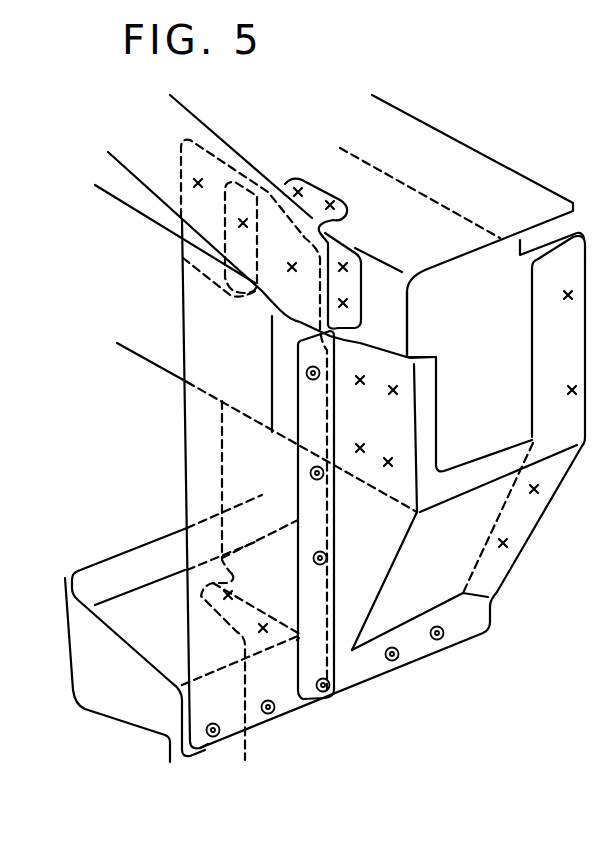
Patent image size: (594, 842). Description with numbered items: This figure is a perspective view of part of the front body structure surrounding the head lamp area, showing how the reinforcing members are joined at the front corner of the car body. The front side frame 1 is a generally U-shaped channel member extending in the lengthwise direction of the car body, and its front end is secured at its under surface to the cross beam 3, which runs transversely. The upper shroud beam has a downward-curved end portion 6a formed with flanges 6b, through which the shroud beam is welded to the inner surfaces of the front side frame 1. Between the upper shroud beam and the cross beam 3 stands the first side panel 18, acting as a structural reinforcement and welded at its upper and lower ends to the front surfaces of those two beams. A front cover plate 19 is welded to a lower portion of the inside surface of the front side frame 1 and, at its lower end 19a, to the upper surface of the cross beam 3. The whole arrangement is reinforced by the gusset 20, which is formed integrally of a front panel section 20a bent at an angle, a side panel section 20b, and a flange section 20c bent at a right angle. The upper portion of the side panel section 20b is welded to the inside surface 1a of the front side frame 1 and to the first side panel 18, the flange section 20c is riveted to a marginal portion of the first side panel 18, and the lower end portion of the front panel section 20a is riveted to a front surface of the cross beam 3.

The front side frame 1 is at (397, 117).
The inside surface of the front side frame 1a is at (400, 304).
The cross beam 3 is at (118, 620).
The end portion of the upper shroud beam 6a is at (168, 112).
The flanges 6b is at (310, 188).
The first side panel 18 is at (197, 477).
The front cover plate 19 is at (222, 458).
The lower end of the front cover plate 19a is at (250, 685).
The gusset 20 is at (503, 572).
The front panel section 20a is at (495, 500).
The side panel section 20b is at (365, 582).
The flange section 20c is at (313, 667).